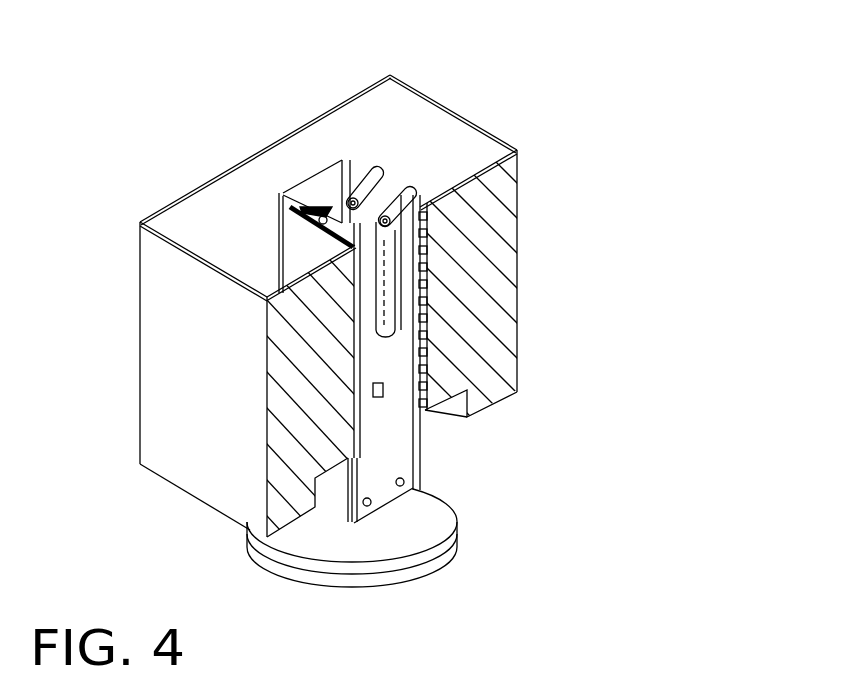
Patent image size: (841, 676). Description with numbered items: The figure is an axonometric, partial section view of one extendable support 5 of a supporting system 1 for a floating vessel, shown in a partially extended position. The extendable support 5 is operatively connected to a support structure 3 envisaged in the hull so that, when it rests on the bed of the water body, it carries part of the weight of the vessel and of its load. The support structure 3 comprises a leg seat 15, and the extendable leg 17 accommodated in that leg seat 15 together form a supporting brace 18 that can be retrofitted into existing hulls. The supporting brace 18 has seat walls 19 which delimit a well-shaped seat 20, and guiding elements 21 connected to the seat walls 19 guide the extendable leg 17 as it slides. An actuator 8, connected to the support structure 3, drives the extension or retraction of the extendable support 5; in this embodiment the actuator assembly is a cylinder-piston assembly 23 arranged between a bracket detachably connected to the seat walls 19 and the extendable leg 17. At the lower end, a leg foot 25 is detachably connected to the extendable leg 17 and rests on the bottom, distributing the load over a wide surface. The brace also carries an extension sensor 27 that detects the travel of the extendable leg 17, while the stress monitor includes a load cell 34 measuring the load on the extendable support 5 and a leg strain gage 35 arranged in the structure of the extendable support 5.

The supporting system 1 is at (588, 200).
The support structure 3 is at (486, 280).
The extendable support 5 is at (452, 438).
The actuator 8 is at (389, 195).
The leg seat 15 is at (310, 186).
The extendable leg 17 is at (397, 460).
The supporting brace 18 is at (330, 527).
The seat walls 19 is at (338, 152).
The well-shaped seat 20 is at (352, 150).
The guiding elements 21 is at (283, 197).
The cylinder-piston assembly 23 is at (410, 185).
The leg foot 25 is at (415, 515).
The extension sensor 27 is at (350, 312).
The load cell 34 is at (420, 220).
The leg strain gage 35 is at (347, 457).